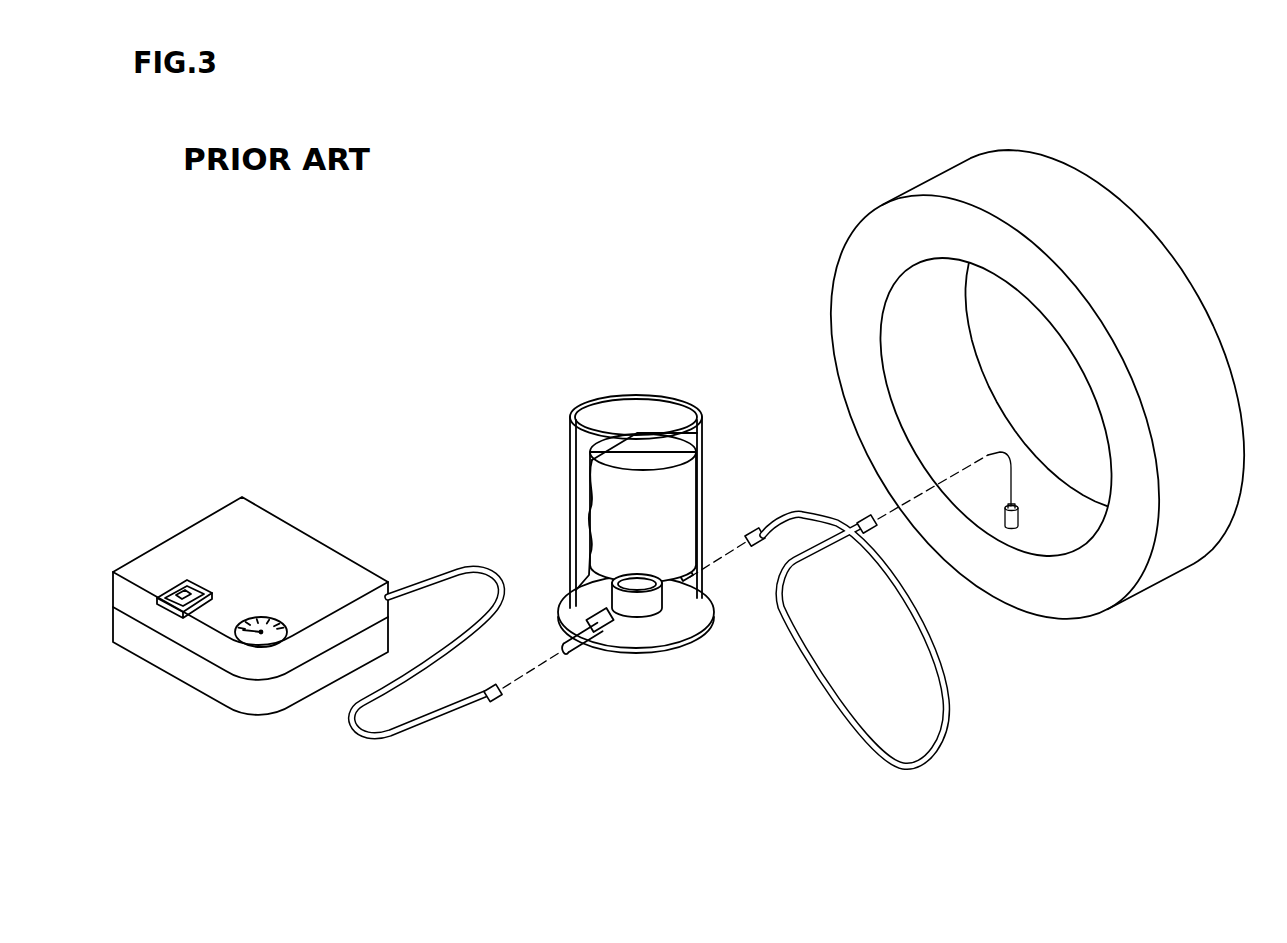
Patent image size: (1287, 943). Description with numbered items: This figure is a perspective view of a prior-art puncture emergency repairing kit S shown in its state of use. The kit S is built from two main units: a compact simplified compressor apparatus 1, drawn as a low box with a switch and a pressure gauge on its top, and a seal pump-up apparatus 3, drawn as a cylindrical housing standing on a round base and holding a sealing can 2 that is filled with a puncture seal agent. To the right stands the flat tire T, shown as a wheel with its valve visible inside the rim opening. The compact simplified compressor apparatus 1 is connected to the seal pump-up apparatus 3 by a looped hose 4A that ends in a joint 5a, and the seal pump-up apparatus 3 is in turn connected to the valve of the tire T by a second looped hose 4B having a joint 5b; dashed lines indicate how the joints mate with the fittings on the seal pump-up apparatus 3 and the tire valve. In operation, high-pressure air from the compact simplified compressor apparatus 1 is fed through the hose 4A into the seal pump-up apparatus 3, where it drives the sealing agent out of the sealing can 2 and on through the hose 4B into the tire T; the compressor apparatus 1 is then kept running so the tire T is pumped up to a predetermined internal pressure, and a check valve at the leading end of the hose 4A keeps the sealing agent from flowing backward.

The compact simplified compressor apparatus 1 is at (327, 503).
The sealing can 2 is at (658, 450).
The seal pump-up apparatus 3 is at (588, 393).
The kit S is at (606, 403).
The tire T is at (839, 218).
The hose 4A is at (448, 722).
The hose 4B is at (817, 720).
The joint 5a is at (500, 698).
The joint 5b is at (873, 527).